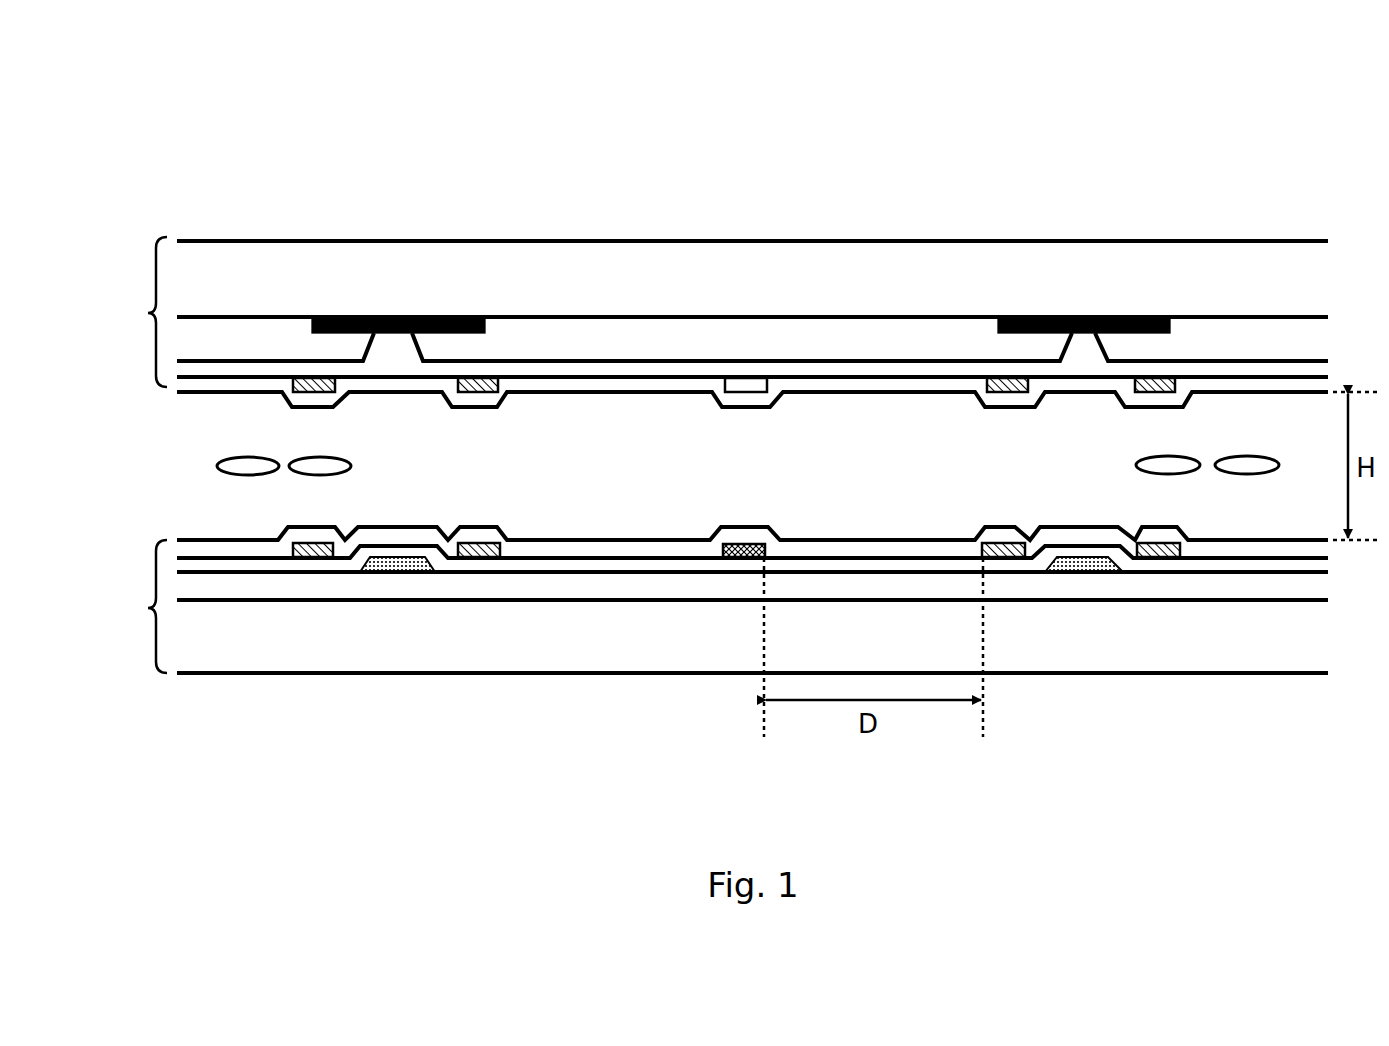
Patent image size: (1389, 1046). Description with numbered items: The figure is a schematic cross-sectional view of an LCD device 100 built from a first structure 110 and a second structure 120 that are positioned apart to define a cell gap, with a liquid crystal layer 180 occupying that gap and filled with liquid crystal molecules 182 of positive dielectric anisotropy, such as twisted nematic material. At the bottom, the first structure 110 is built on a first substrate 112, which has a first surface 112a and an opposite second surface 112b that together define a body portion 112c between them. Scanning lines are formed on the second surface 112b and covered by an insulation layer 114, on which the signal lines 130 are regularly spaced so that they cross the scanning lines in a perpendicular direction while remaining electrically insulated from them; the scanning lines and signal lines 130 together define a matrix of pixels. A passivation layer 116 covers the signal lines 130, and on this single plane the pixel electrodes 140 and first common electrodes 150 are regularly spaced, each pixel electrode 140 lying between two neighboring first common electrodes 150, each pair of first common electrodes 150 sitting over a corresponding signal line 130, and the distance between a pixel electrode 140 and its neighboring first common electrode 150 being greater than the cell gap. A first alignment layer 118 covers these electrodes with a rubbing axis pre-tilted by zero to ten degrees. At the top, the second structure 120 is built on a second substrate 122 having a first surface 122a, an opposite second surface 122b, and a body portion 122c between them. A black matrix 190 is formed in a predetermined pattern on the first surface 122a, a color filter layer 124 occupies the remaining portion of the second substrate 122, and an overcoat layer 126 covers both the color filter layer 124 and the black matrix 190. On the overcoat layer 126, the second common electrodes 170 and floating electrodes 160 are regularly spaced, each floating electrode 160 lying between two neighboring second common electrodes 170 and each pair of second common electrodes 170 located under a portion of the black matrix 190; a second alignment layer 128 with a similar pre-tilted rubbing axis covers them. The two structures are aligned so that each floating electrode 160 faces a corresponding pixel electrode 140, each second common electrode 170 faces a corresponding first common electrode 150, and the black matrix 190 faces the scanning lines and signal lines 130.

The LCD device 100 is at (733, 91).
The first structure 110 is at (705, 627).
The first substrate 112 is at (678, 650).
The first surface 112a is at (330, 673).
The second surface 112b is at (240, 592).
The body portion 112c is at (258, 633).
The insulation layer 114 is at (498, 587).
The passivation layer 116 is at (590, 565).
The first alignment layer 118 is at (1235, 548).
The second structure 120 is at (705, 297).
The second substrate 122 is at (816, 287).
The first surface 122a is at (263, 241).
The second surface 122b is at (195, 316).
The body portion 122c is at (334, 282).
The color filter layer 124 is at (668, 337).
The overcoat layer 126 is at (543, 375).
The second alignment layer 128 is at (1230, 383).
The signal lines 130 is at (397, 573).
The pixel electrodes 140 is at (748, 548).
The first common electrodes 150 is at (473, 547).
The floating electrodes 160 is at (758, 381).
The second common electrodes 170 is at (318, 392).
The liquid crystal layer 180 is at (678, 474).
The liquid crystal molecules 182 is at (1185, 474).
The black matrix 190 is at (440, 313).